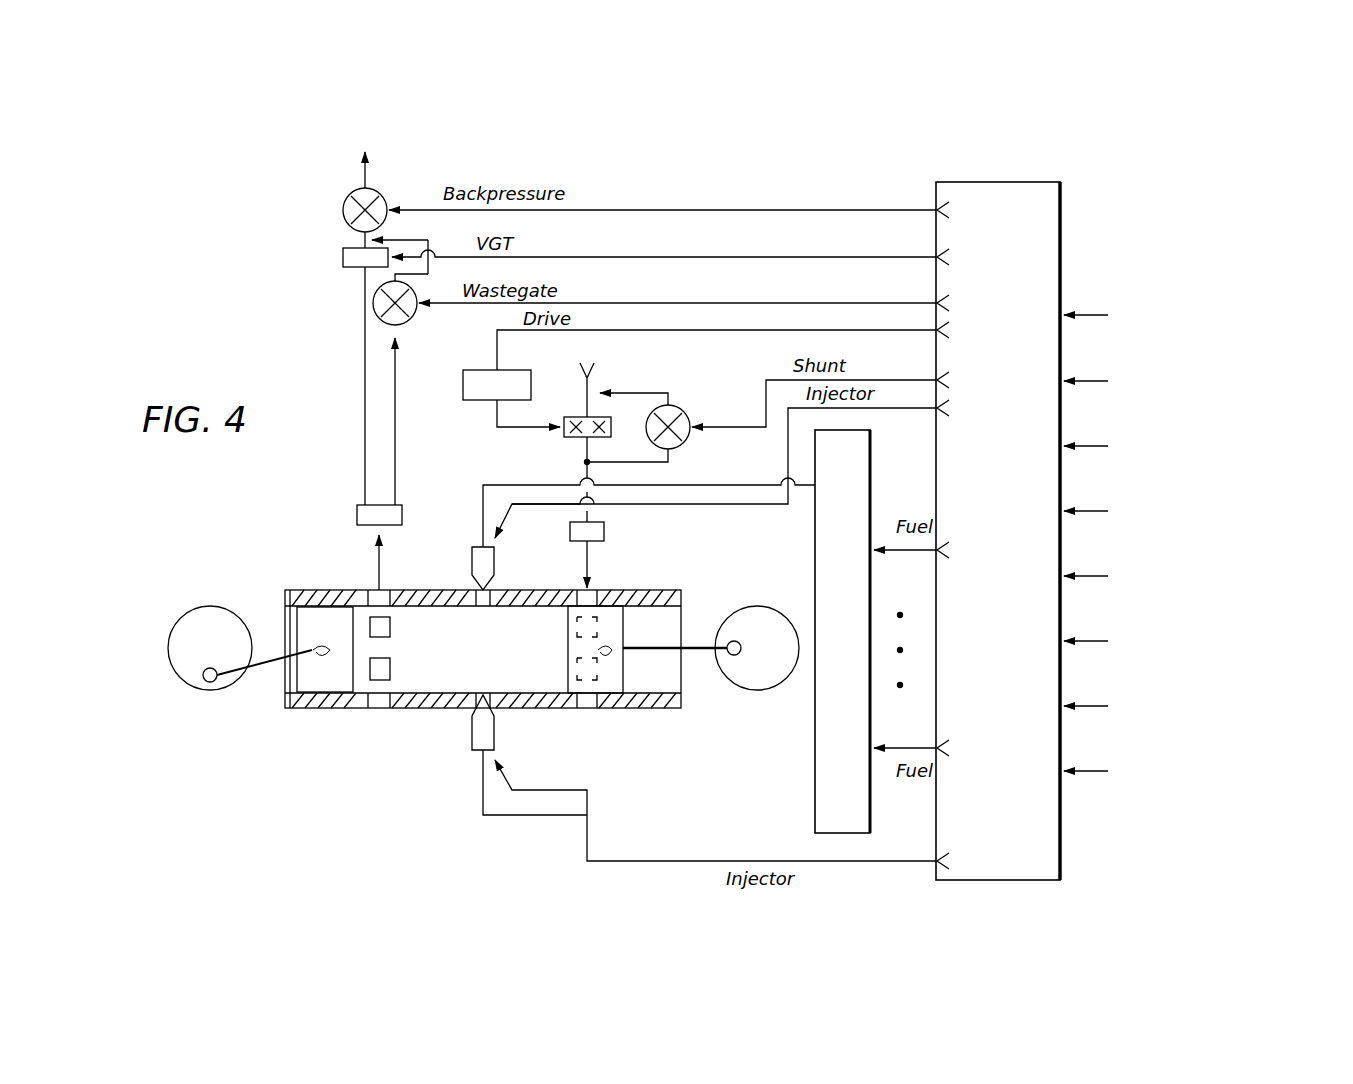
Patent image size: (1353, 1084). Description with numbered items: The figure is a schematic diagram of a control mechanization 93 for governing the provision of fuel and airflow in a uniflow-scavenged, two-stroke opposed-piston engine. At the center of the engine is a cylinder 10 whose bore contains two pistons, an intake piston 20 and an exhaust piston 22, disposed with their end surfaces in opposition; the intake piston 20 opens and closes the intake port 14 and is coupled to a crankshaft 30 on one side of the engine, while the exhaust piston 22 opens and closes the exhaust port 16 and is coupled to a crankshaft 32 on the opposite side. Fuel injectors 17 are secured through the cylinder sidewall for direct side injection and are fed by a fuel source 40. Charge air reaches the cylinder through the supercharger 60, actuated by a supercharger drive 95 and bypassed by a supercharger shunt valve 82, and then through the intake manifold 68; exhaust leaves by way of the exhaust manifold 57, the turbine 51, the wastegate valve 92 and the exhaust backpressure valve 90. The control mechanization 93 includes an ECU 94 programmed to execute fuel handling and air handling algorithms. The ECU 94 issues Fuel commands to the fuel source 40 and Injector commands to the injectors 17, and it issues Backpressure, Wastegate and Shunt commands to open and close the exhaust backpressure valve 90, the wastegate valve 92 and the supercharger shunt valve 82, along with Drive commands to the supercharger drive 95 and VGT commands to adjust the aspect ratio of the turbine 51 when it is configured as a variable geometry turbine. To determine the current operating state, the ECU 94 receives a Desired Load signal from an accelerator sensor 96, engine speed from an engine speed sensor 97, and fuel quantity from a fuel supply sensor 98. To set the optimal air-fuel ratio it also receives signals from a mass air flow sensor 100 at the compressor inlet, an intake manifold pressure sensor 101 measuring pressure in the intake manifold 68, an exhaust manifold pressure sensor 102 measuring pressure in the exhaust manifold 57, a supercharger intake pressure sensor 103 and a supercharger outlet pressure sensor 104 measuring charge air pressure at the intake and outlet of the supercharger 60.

The control mechanization 93 is at (185, 288).
The ECU 94 is at (1040, 182).
The exhaust backpressure valve 90 is at (343, 204).
The turbine 51 is at (343, 256).
The wastegate valve 92 is at (410, 320).
The exhaust manifold 57 is at (357, 517).
The supercharger drive 95 is at (463, 385).
The supercharger 60 is at (575, 437).
The supercharger shunt valve 82 is at (675, 405).
The intake manifold 68 is at (604, 535).
The cylinder 10 is at (508, 708).
The exhaust piston 22 is at (318, 675).
The intake piston 20 is at (615, 627).
The crankshaft 32 is at (190, 608).
The crankshaft 30 is at (754, 690).
The exhaust port 16 is at (379, 718).
The intake port 14 is at (587, 712).
The fuel injectors 17 is at (494, 560).
The fuel source 40 is at (870, 470).
The accelerator sensor 96 is at (1193, 321).
The engine speed sensor 97 is at (1193, 387).
The fuel supply sensor 98 is at (1193, 452).
The mass air flow sensor 100 is at (1193, 510).
The intake manifold pressure sensor 101 is at (1245, 580).
The exhaust manifold pressure sensor 102 is at (1245, 645).
The supercharger intake pressure sensor 103 is at (1233, 710).
The supercharger outlet pressure sensor 104 is at (1233, 775).